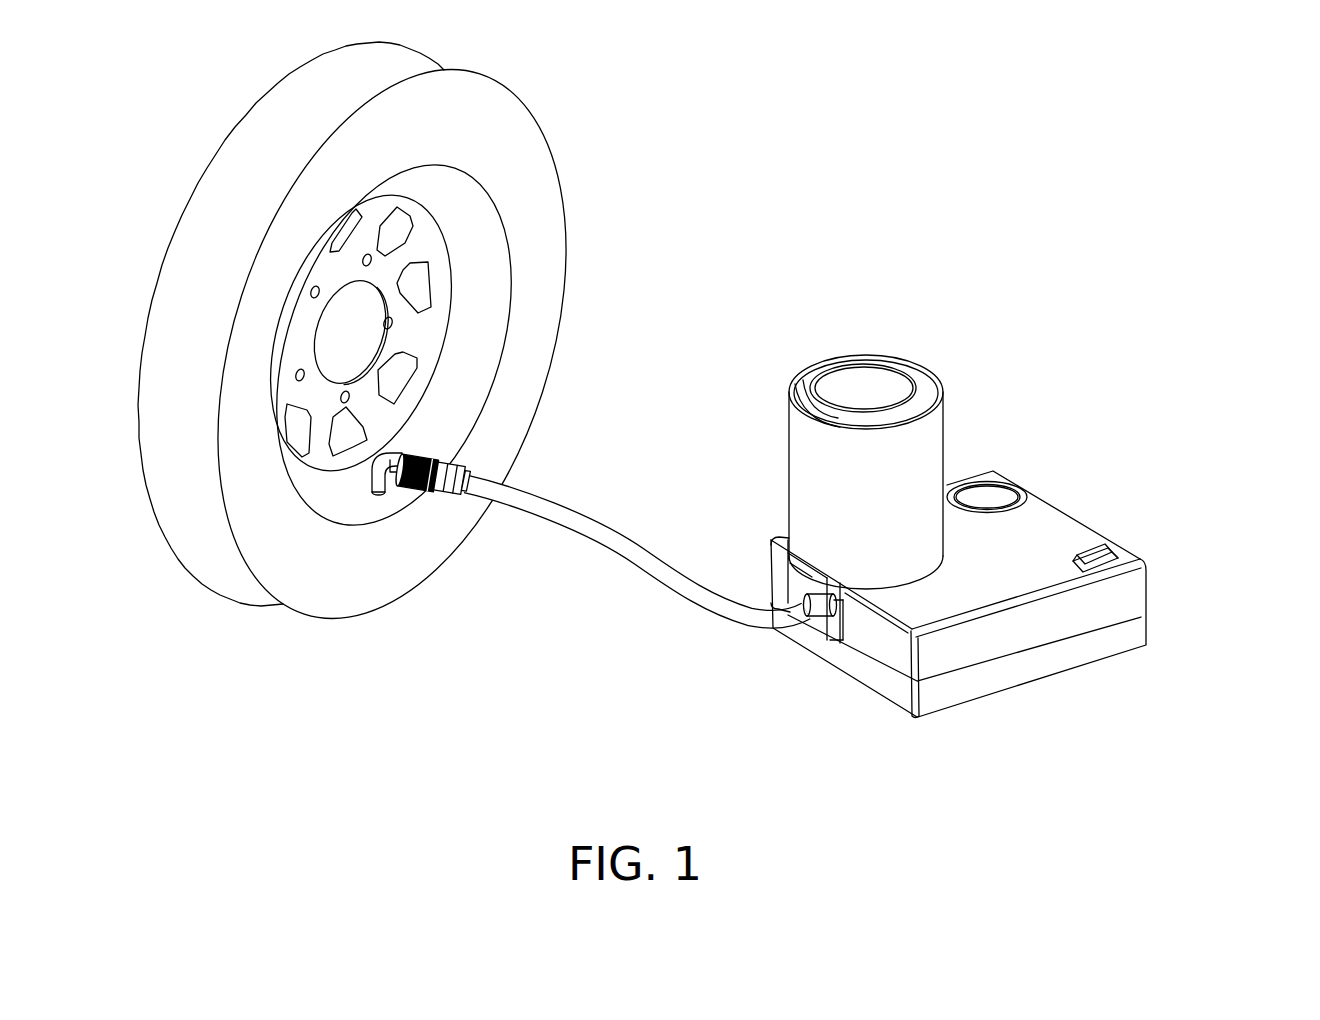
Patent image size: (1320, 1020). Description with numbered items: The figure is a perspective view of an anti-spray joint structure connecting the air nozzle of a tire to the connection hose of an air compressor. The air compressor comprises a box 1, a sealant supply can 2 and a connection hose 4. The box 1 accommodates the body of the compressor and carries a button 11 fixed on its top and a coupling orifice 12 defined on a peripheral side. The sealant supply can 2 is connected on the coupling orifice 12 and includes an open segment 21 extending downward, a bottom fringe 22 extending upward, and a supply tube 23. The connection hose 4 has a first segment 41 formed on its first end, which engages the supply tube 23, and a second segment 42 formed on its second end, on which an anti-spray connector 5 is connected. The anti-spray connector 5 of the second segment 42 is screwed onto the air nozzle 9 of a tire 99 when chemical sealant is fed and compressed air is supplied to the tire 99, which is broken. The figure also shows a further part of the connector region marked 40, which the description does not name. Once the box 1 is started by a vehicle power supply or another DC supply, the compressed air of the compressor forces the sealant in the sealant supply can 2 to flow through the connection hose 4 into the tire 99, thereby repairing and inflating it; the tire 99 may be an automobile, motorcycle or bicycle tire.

The box 1 is at (978, 569).
The sealant supply can 2 is at (946, 406).
The connection hose 4 is at (636, 581).
The anti-spray connector 5 is at (503, 526).
The air nozzle 9 is at (415, 549).
The button 11 is at (1173, 541).
The coupling orifice 12 is at (749, 569).
The open segment 21 is at (757, 535).
The bottom fringe 22 is at (882, 317).
The supply tube 23 is at (828, 676).
The connector body 40 is at (470, 536).
The first segment 41 is at (793, 662).
The second segment 42 is at (522, 528).
The tire 99 is at (382, 378).